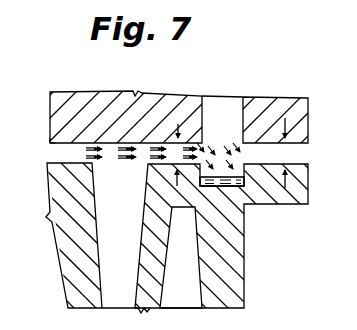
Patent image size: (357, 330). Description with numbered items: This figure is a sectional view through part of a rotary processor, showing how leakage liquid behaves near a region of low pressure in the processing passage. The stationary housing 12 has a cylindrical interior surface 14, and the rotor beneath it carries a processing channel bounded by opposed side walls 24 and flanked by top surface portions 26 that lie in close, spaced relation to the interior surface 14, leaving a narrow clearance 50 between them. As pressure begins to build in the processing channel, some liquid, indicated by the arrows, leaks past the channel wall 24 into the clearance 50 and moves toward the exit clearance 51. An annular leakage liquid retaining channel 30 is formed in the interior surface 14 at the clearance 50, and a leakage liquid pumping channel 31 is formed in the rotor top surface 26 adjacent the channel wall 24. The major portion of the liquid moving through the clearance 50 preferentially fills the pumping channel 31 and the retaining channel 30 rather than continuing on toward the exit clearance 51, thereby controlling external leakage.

The housing 12 is at (97, 100).
The cylindrical interior surface 14 is at (50, 143).
The channel side walls 24 is at (143, 225).
The top surface portions 26 is at (62, 161).
The annular leakage liquid retaining channel 30 is at (226, 106).
The leakage liquid pumping channel 31 is at (228, 187).
The clearance 50 is at (175, 146).
The exit clearance 51 is at (288, 153).